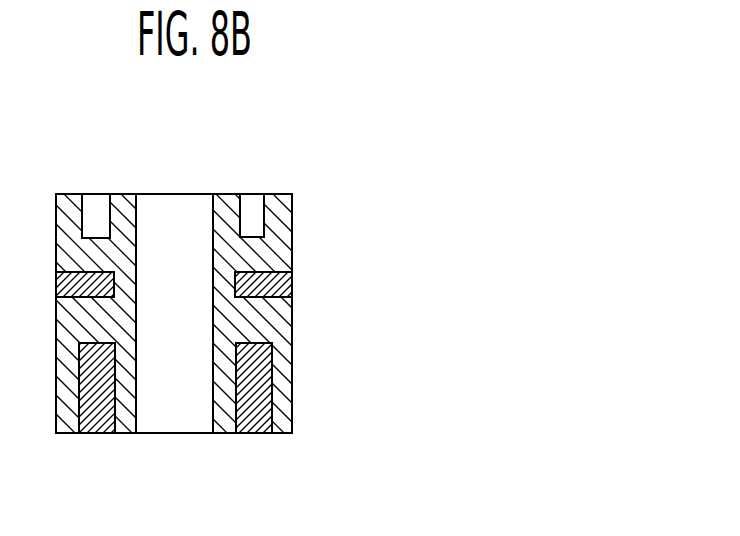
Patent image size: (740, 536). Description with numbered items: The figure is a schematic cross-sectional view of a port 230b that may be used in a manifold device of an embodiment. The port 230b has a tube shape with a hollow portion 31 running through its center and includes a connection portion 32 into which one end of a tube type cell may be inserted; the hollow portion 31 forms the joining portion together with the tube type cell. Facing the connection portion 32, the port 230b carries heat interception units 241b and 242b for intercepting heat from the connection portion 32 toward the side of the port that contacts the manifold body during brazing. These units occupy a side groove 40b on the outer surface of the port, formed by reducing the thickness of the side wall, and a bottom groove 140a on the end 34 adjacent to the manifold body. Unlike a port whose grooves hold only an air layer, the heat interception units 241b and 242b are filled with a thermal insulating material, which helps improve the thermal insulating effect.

The port 230b is at (345, 177).
The hollow portion 31 is at (182, 194).
The connection portion 32 is at (253, 194).
The end 34 is at (225, 433).
The side groove 40b is at (258, 270).
The heat interception unit 241b is at (292, 282).
The bottom groove 140a is at (272, 353).
The heat interception unit 242b is at (262, 386).